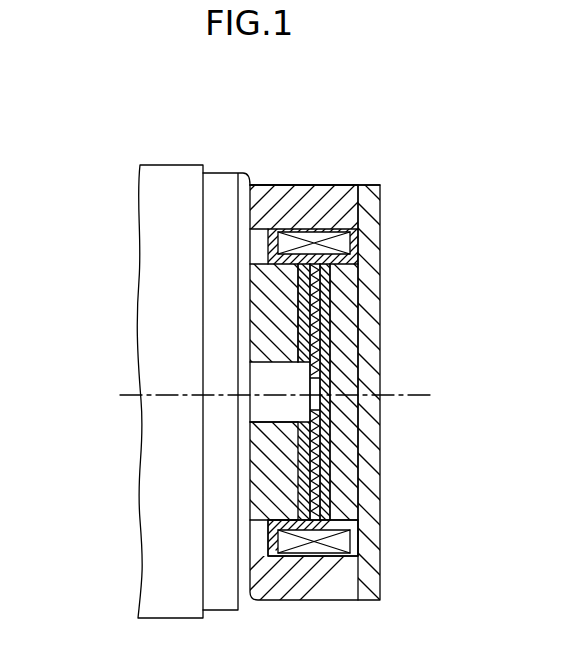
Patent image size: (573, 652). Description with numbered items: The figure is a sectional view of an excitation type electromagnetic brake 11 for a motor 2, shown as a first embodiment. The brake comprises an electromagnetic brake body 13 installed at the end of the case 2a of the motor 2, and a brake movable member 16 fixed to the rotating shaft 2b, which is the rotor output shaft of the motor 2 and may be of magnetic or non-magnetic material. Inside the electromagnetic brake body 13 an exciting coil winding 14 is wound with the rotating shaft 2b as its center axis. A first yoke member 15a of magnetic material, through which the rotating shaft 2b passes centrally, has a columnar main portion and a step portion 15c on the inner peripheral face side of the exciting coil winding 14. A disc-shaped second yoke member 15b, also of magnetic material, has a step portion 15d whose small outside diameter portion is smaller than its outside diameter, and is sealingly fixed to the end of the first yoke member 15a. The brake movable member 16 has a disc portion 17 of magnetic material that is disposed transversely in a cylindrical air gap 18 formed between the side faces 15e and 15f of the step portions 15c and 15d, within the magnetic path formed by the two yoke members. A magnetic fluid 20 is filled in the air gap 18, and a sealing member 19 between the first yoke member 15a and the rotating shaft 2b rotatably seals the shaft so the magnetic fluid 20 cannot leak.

The motor 2 is at (128, 218).
The case 2a is at (227, 188).
The rotating shaft 2b is at (262, 404).
The excitation type electromagnetic brake 11 is at (370, 168).
The electromagnetic brake body 13 is at (281, 177).
The exciting coil winding 14 is at (360, 212).
The first yoke member 15a is at (320, 190).
The second yoke member 15b is at (367, 424).
The step portion 15c is at (268, 236).
The step portion 15d is at (347, 258).
The side face 15e is at (297, 295).
The side face 15f is at (331, 298).
The brake movable member 16 is at (316, 380).
The disc portion 17 is at (302, 362).
The cylindrical air gap 18 is at (331, 480).
The sealing member 19 is at (262, 453).
The magnetic fluid 20 is at (313, 538).